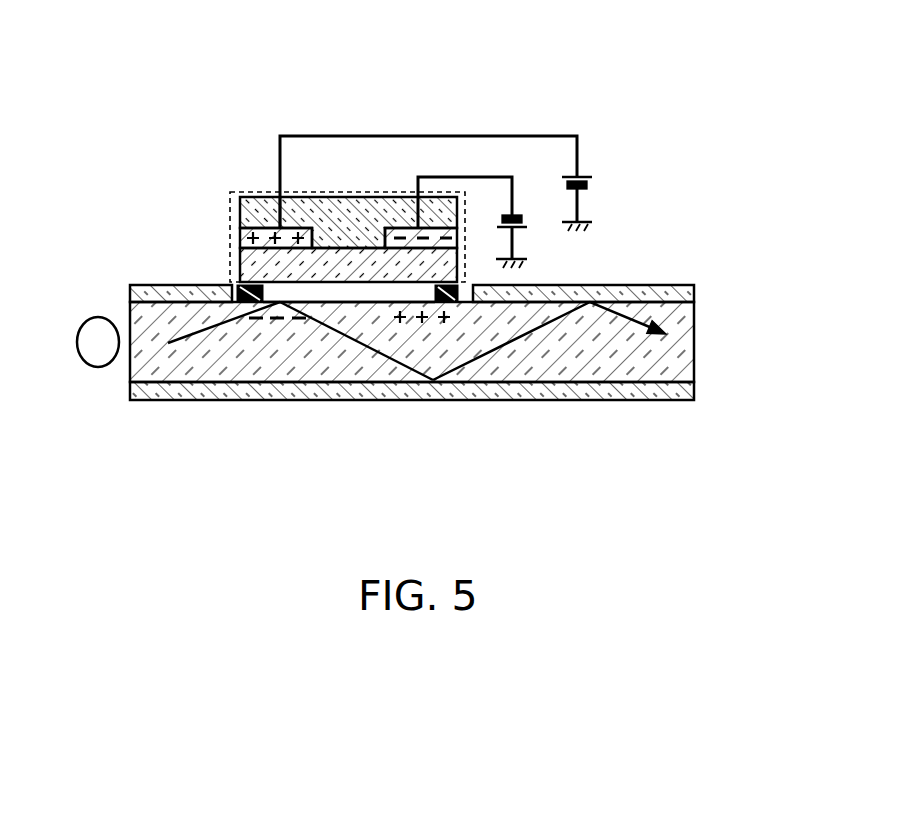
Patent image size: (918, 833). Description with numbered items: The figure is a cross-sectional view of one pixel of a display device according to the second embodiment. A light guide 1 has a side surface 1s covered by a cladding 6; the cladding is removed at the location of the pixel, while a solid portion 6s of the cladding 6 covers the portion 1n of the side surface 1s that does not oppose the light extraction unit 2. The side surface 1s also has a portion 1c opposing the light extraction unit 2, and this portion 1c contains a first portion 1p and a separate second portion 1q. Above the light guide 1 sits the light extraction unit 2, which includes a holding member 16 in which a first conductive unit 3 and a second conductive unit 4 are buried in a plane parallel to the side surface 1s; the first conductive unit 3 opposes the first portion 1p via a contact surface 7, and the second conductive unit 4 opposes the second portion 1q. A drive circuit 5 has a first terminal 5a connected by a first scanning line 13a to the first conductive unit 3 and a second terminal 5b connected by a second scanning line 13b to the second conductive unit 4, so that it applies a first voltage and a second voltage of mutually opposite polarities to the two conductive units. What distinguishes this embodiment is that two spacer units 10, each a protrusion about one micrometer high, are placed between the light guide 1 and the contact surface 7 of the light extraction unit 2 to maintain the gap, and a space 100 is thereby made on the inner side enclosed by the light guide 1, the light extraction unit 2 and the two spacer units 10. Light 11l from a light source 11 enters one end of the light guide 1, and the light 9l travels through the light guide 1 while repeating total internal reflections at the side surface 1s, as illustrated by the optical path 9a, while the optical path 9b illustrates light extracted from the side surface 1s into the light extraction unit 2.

The light guide 1 is at (672, 355).
The side surface 1s is at (530, 300).
The portion not opposing the light extraction unit 1n is at (668, 306).
The first portion 1p is at (300, 303).
The second portion 1q is at (433, 305).
The portion opposing the light extraction unit 1c is at (362, 303).
The light extraction unit 2 is at (243, 191).
The first conductive unit 3 is at (255, 218).
The second conductive unit 4 is at (402, 228).
The drive circuit 5 is at (554, 142).
The first terminal 5a is at (587, 147).
The second terminal 5b is at (520, 213).
The cladding 6 is at (670, 390).
The solid portion of the cladding 6s is at (667, 290).
The contact surface 7 is at (258, 267).
The optical path 9a is at (497, 348).
The optical path 9b is at (372, 217).
The light in the light guide 9l is at (390, 304).
The spacer unit 10 is at (253, 295).
The light source 11 is at (97, 348).
The light 11l is at (223, 325).
The first scanning line 13a is at (418, 136).
The second scanning line 13b is at (460, 177).
The holding member 16 is at (246, 231).
The space 100 is at (337, 290).